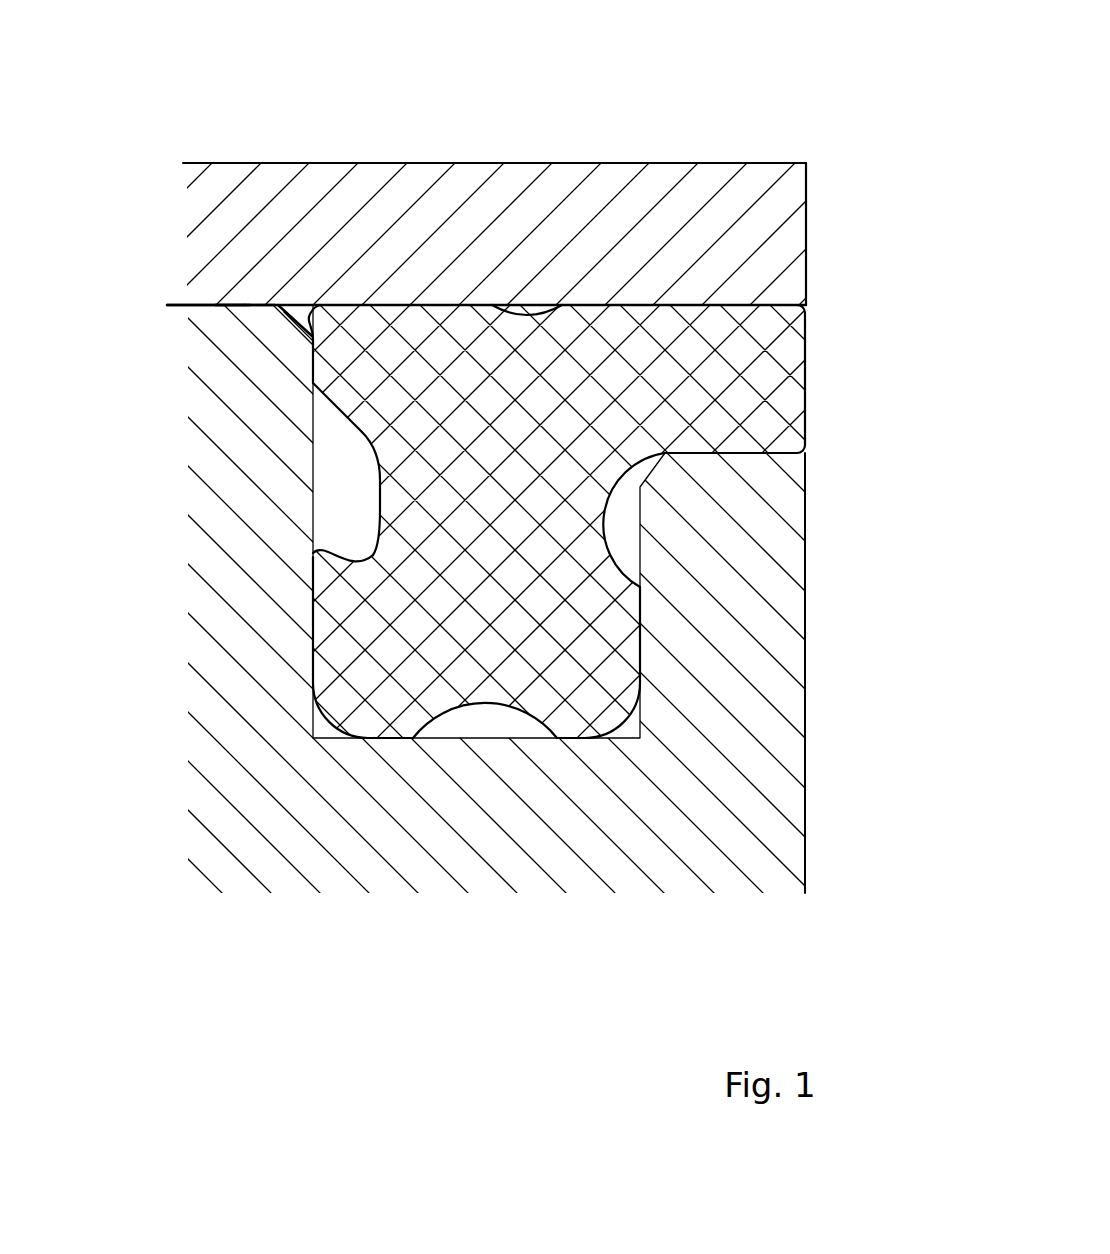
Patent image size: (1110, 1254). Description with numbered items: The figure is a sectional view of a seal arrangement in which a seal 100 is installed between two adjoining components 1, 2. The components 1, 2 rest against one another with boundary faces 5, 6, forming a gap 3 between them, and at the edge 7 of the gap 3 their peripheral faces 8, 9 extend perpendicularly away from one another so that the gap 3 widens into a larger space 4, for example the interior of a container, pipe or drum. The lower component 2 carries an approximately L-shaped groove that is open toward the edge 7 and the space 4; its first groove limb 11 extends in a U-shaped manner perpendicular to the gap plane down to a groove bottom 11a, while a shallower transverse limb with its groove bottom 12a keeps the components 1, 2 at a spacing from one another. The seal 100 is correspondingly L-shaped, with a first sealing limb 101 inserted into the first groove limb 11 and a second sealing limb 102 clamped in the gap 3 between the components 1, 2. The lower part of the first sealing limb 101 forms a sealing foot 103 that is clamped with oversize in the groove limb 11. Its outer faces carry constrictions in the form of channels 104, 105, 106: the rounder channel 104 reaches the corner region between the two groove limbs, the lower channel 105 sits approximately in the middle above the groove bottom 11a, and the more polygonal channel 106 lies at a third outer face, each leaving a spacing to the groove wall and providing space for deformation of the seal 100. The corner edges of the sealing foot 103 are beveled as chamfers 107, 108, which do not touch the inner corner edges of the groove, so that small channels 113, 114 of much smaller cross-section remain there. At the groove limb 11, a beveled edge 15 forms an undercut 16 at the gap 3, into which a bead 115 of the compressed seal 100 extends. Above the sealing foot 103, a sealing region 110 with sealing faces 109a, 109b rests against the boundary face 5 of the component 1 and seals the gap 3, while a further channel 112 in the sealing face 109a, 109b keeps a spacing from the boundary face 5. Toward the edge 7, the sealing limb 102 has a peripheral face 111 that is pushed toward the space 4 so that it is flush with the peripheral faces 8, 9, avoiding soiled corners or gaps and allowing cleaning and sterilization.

The component 1 is at (807, 168).
The component 2 is at (757, 763).
The gap 3 is at (260, 303).
The space 4 is at (837, 358).
The boundary face 5 is at (230, 303).
The boundary face 6 is at (238, 310).
The edge 7 is at (808, 308).
The peripheral face 8 is at (808, 233).
The peripheral face 9 is at (808, 668).
The first groove limb 11 is at (337, 463).
The groove bottom 11a is at (430, 740).
The groove bottom 12a is at (747, 457).
The beveled edge 15 is at (310, 333).
The undercut 16 is at (298, 313).
The seal 100 is at (580, 717).
The first sealing limb 101 is at (458, 397).
The second sealing limb 102 is at (714, 375).
The sealing foot 103 is at (408, 667).
The sealing channel 104 is at (605, 528).
The lower sealing channel 105 is at (485, 707).
The third sealing channel 106 is at (377, 500).
The chamfer 107 is at (630, 715).
The chamfer 108 is at (323, 703).
The sealing face 109a is at (388, 303).
The sealing face 109b is at (688, 303).
The sealing region 110 is at (587, 353).
The peripheral face 111 is at (807, 415).
The further channel 112 is at (528, 305).
The small channel 113 is at (405, 670).
The small channel 114 is at (612, 720).
The bead 115 is at (319, 320).